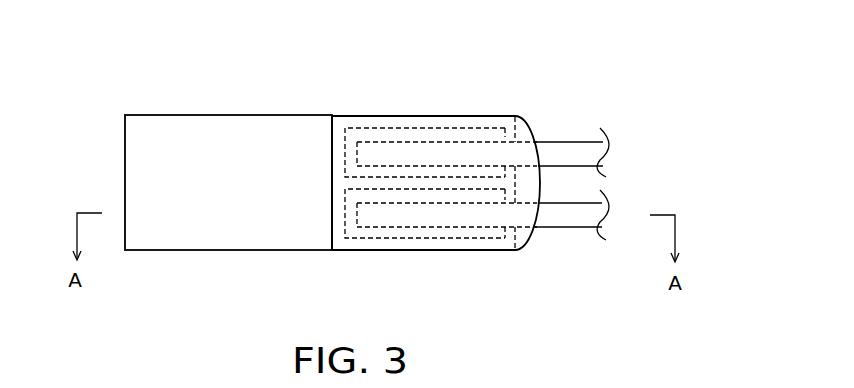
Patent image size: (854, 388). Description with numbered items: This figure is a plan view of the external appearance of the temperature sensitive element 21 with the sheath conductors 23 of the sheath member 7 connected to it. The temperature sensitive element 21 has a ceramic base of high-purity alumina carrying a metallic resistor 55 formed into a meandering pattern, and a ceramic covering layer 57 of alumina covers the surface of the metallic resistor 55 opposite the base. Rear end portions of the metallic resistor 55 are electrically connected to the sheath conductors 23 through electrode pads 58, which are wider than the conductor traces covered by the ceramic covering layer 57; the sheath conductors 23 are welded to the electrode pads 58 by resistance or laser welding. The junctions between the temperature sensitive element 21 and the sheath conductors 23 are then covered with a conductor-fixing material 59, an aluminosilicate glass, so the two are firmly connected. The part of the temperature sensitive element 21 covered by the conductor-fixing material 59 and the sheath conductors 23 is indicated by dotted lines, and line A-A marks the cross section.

The temperature sensitive element 21 is at (269, 64).
The sheath member 7 is at (585, 64).
The sheath conductors 23 is at (568, 153).
The metallic resistor 55 is at (346, 141).
The ceramic covering layer 57 is at (183, 233).
The electrode pads 58 is at (408, 128).
The conductor-fixing material 59 is at (516, 250).